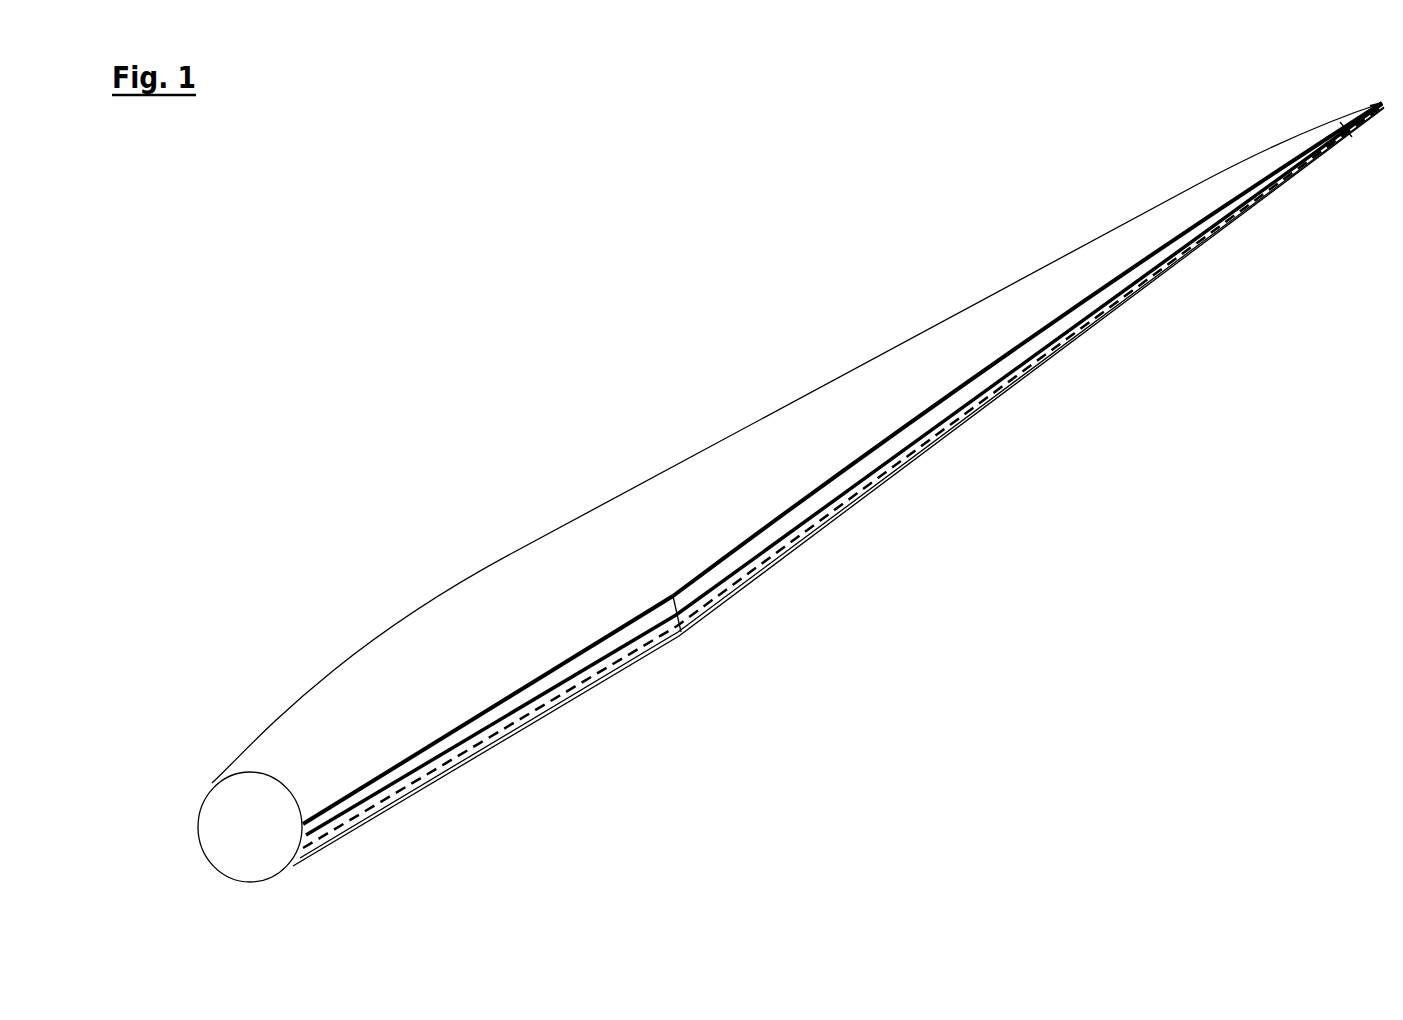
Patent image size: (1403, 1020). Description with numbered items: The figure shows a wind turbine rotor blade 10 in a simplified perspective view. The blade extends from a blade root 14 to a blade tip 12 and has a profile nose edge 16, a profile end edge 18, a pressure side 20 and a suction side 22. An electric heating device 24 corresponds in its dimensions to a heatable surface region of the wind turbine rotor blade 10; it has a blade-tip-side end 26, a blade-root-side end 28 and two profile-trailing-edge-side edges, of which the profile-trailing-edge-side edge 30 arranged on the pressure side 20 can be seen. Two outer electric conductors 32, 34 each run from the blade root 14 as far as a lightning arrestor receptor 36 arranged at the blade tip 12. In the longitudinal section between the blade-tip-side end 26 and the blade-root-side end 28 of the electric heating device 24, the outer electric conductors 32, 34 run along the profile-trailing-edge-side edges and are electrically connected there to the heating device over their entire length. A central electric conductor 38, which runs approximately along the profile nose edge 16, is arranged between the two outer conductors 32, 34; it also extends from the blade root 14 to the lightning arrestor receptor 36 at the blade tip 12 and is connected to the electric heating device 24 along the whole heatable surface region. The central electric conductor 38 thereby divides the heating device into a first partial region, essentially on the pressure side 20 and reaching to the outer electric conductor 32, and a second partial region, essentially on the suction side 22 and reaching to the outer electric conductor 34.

The wind turbine rotor blade 10 is at (433, 268).
The blade tip 12 is at (1382, 103).
The blade root 14 is at (217, 778).
The profile nose edge 16 is at (615, 655).
The profile end edge 18 is at (518, 548).
The pressure side 20 is at (722, 478).
The suction side 22 is at (430, 808).
The electric heating device 24 is at (1020, 355).
The blade-tip-side end 26 is at (1347, 127).
The blade-root-side end 28 is at (682, 625).
The profile-trailing-edge-side edge 30 is at (972, 380).
The outer electric conductor 32 is at (425, 748).
The outer electric conductor 34 is at (390, 798).
The lightning arrestor receptor 36 is at (1386, 108).
The central electric conductor 38 is at (367, 802).